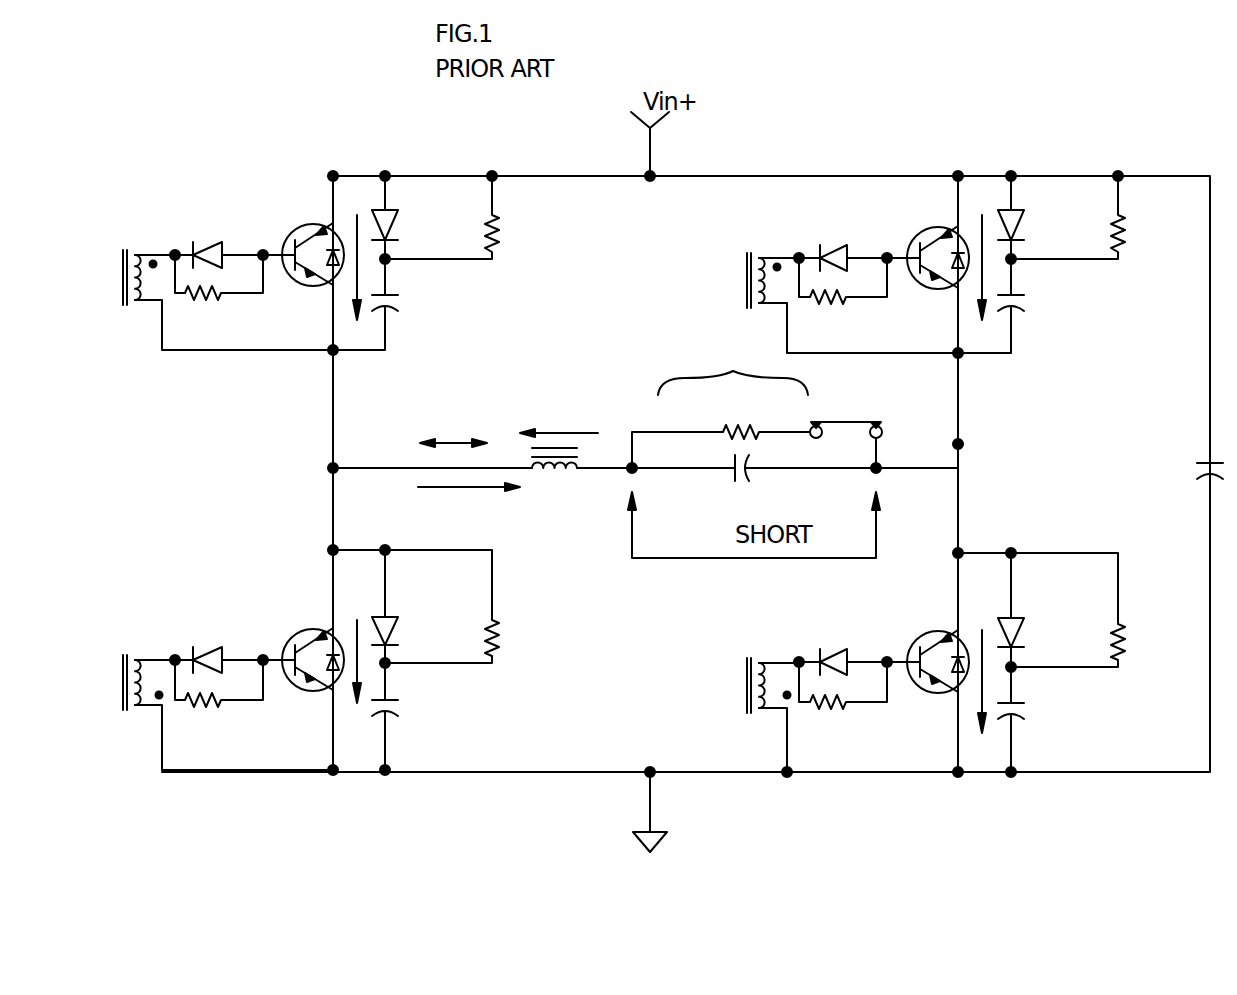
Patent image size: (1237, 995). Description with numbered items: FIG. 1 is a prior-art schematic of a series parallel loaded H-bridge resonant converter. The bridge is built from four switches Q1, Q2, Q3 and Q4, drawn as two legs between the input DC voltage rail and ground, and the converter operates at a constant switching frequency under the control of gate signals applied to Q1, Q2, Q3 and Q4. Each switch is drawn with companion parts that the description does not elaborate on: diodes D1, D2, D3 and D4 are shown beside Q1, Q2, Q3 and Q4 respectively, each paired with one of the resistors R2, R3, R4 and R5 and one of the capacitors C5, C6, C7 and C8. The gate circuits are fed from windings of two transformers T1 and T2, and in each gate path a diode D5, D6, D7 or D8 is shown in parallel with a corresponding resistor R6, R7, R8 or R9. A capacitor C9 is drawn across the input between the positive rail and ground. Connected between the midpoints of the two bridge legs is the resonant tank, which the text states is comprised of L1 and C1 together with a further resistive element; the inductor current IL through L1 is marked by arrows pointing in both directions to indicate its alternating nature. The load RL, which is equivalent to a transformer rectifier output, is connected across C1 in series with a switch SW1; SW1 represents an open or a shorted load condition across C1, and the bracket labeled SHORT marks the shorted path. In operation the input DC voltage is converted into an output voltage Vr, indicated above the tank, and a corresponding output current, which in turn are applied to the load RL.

The H-bridge switch Q1 is at (312, 255).
The H-bridge switch Q2 is at (312, 645).
The H-bridge switch Q3 is at (936, 255).
The H-bridge switch Q4 is at (933, 660).
The diode D1 is at (409, 217).
The diode D2 is at (409, 606).
The diode D3 is at (1035, 217).
The diode D4 is at (1035, 610).
The diode D5 is at (219, 229).
The diode D6 is at (219, 620).
The diode D7 is at (843, 230).
The diode D8 is at (843, 642).
The resistor R2 is at (462, 215).
The resistor R3 is at (434, 606).
The resistor R4 is at (1088, 215).
The resistor R5 is at (1061, 610).
The resistor R6 is at (219, 296).
The resistor R7 is at (219, 702).
The resistor R8 is at (843, 298).
The resistor R9 is at (843, 705).
The resonant tank capacitor C1 is at (795, 487).
The capacitor C5 is at (387, 304).
The capacitor C6 is at (406, 719).
The capacitor C7 is at (1012, 306).
The capacitor C8 is at (1031, 722).
The input capacitor C9 is at (1181, 459).
The gate drive transformer T1 is at (227, 496).
The gate drive transformer T2 is at (852, 500).
The resonant tank inductor L1 is at (482, 433).
The inductor current IL is at (469, 445).
The load RL is at (721, 429).
The load condition switch SW1 is at (847, 426).
The output voltage Vr is at (733, 369).